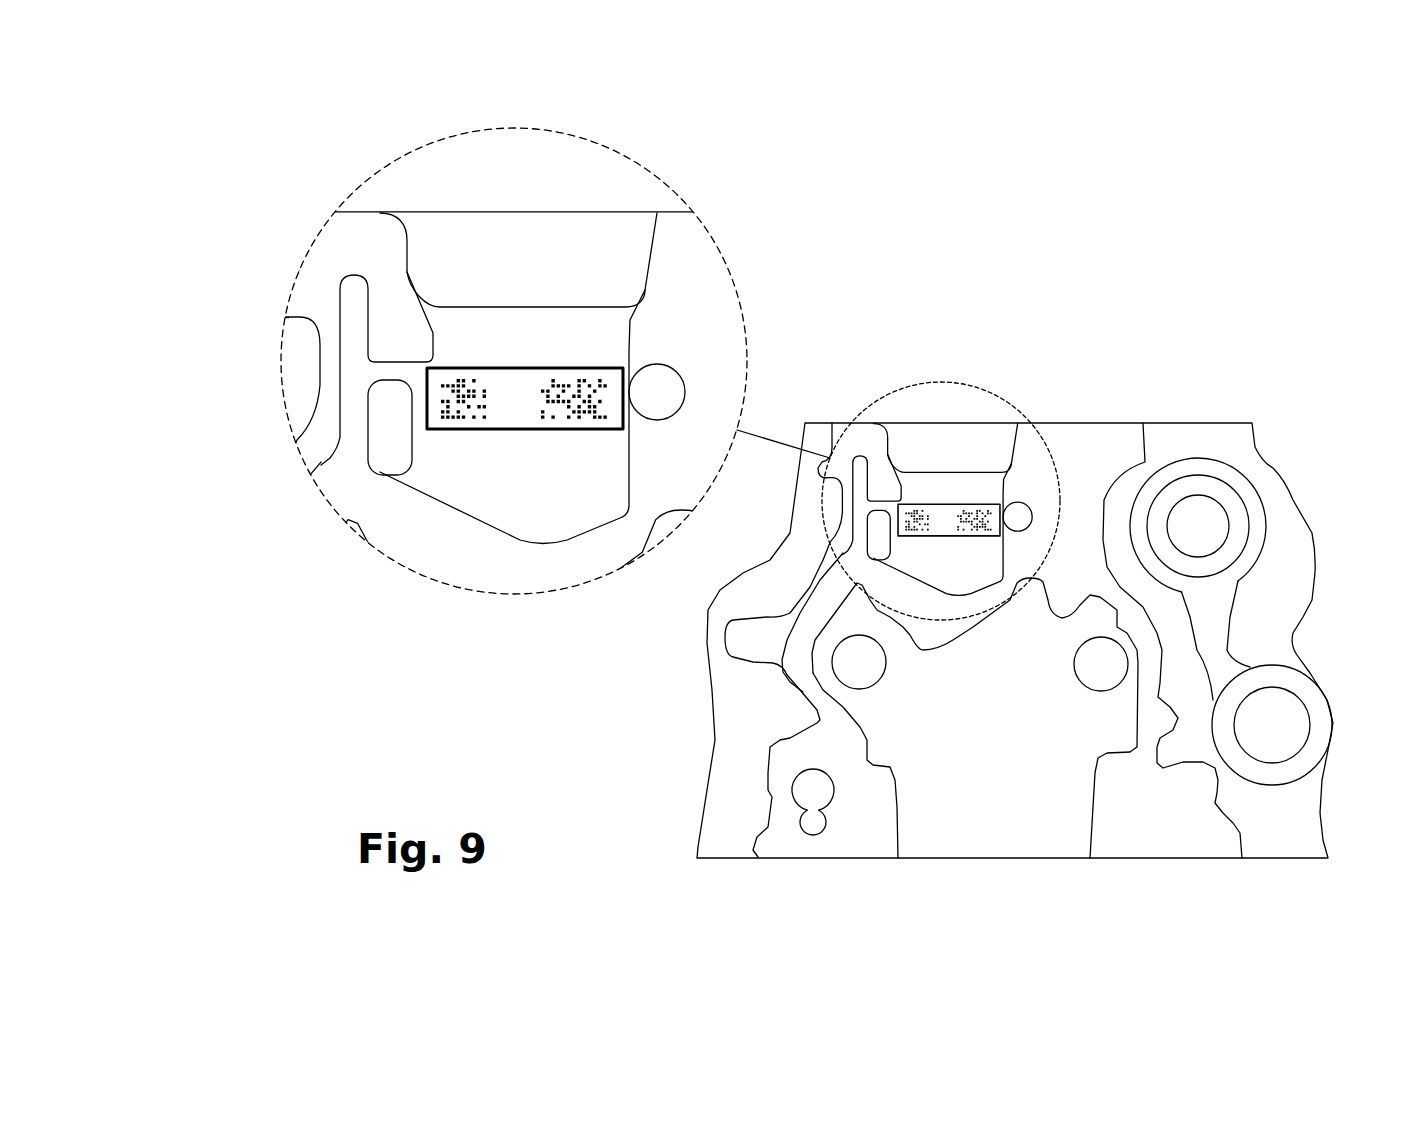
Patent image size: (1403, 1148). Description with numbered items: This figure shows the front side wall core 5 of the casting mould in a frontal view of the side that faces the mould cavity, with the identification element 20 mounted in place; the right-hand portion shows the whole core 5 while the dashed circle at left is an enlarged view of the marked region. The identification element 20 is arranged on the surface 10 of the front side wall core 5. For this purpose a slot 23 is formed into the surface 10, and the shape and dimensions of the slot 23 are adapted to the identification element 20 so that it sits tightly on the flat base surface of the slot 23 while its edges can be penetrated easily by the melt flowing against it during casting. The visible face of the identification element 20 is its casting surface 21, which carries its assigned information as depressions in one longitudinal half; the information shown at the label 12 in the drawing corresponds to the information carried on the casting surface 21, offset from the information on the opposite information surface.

The front side wall core 5 is at (1184, 423).
The surface 10 is at (592, 330).
The second data matrix code 12 is at (505, 403).
The identification element 20 is at (505, 418).
The casting surface 21 is at (440, 385).
The slot 23 is at (417, 432).